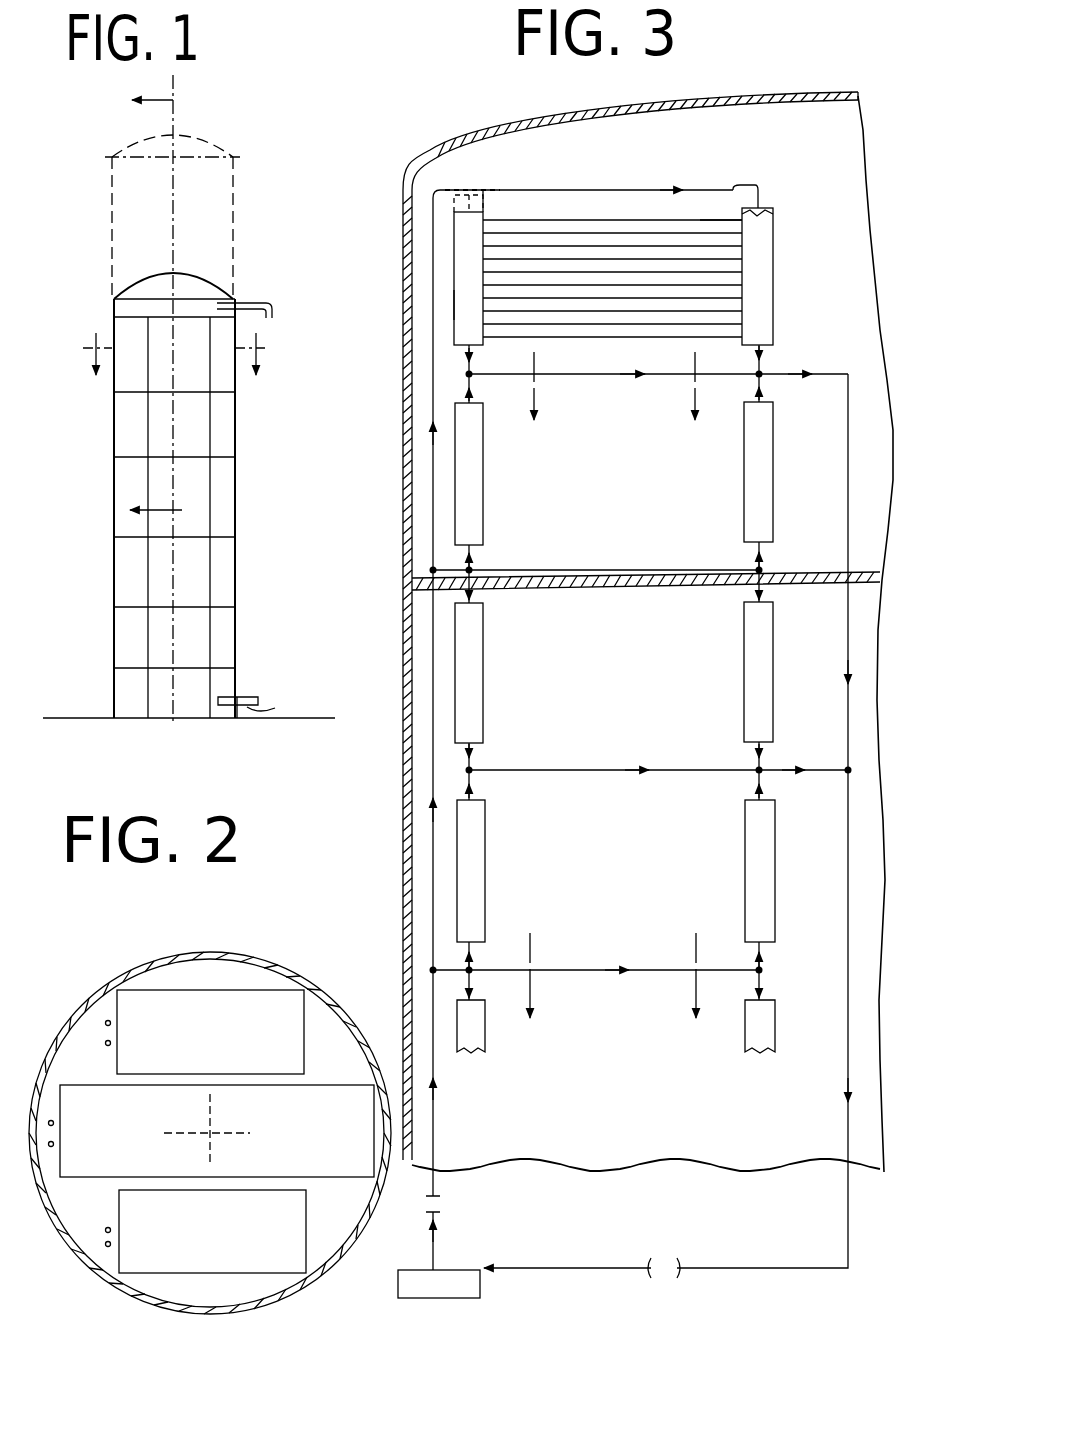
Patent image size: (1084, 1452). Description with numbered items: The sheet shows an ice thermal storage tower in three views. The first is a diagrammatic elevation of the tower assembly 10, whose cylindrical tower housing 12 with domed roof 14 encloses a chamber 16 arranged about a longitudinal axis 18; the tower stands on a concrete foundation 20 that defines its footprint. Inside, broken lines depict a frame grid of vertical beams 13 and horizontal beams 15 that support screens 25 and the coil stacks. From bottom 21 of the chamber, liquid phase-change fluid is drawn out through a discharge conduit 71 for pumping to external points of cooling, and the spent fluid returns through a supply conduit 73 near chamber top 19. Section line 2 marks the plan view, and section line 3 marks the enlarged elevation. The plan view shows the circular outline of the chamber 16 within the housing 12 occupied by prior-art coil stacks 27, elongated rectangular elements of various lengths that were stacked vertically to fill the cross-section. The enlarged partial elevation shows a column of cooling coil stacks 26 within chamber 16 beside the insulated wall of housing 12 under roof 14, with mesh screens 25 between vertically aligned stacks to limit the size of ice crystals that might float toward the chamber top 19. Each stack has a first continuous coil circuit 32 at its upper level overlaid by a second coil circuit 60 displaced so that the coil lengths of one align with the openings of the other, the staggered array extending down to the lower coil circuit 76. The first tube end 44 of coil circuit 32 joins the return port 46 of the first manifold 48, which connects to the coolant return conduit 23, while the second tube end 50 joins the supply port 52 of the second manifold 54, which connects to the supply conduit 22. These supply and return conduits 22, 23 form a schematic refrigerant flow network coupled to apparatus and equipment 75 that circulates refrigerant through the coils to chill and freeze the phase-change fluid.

In FIG. 1, the tower assembly 10 is at (266, 156).
In FIG. 3, the tower assembly 10 is at (729, 86).
In FIG. 1, the tower housing 12 is at (114, 590).
In FIG. 2, the tower housing 12 is at (236, 954).
In FIG. 1, the vertical beams 13 is at (213, 690).
In FIG. 1, the roof 14 is at (213, 145).
In FIG. 1, the horizontal beams 15 is at (212, 667).
In FIG. 1, the chamber 16 is at (180, 584).
In FIG. 2, the chamber 16 is at (82, 1209).
In FIG. 3, the chamber 16 is at (829, 298).
In FIG. 1, the longitudinal axis 18 is at (178, 80).
In FIG. 1, the chamber top 19 is at (212, 303).
In FIG. 3, the chamber top 19 is at (793, 102).
In FIG. 1, the concrete foundation 20 is at (288, 718).
In FIG. 1, the bottom 21 is at (133, 712).
In FIG. 3, the supply conduit 22 is at (505, 178).
In FIG. 3, the coolant return conduit 23 is at (846, 390).
In FIG. 3, the screen 25 is at (808, 588).
In FIG. 3, the cooling coil stack 26 is at (422, 548).
In FIG. 2, the prior-art coil stacks 27 is at (345, 1085).
In FIG. 3, the first continuous coil circuit 32 is at (712, 214).
In FIG. 3, the first tube end 44 is at (745, 187).
In FIG. 3, the return port 46 is at (770, 212).
In FIG. 3, the first manifold 48 is at (779, 242).
In FIG. 3, the second tube end 50 is at (484, 210).
In FIG. 3, the supply port 52 is at (458, 198).
In FIG. 3, the second manifold 54 is at (452, 306).
In FIG. 3, the second continuous coil circuit 60 is at (626, 226).
In FIG. 1, the discharge conduit 71 is at (268, 710).
In FIG. 1, the supply conduit 73 is at (279, 320).
In FIG. 3, the apparatus and equipment 75 is at (481, 1282).
In FIG. 3, the coil circuit 76 is at (700, 337).
In FIG. 1, the section line 2— 2 is at (175, 374).
In FIG. 1, the section line 3— 3 is at (144, 297).